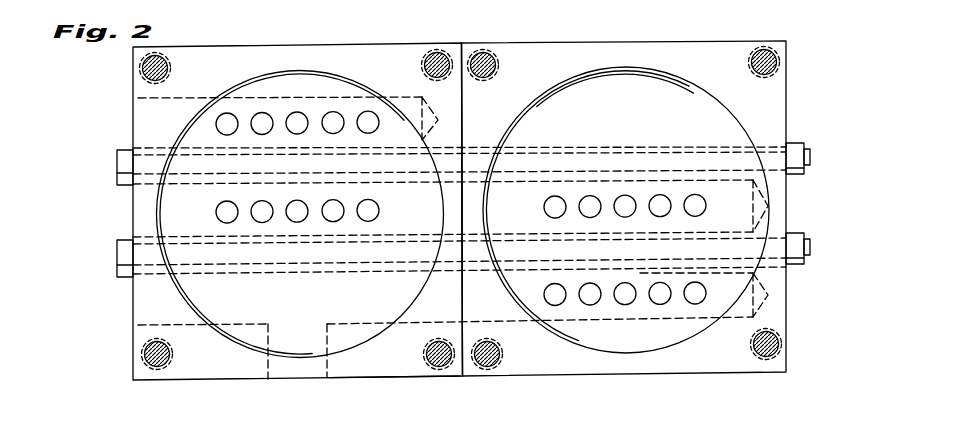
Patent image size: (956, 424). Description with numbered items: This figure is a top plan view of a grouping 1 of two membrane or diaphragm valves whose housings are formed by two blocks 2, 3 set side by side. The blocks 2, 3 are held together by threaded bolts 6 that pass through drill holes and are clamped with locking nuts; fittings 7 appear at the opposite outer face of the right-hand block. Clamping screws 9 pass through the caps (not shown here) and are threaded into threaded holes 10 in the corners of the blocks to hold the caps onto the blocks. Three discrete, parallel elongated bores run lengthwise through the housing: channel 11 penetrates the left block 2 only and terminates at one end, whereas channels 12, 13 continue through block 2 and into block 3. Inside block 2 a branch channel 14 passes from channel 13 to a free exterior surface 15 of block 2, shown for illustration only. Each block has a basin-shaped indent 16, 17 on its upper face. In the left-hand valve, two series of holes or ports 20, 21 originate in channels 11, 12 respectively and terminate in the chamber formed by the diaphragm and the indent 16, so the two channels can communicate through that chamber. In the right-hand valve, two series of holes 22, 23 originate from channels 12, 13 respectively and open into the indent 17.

The grouping 1 is at (463, 38).
The block 2 is at (203, 364).
The block 3 is at (513, 355).
The threaded bolt 6 is at (117, 165).
The outlet fitting 7 is at (810, 140).
The clamping screw 9 is at (490, 56).
The threaded hole 10 is at (160, 57).
The channel 11 is at (133, 98).
The channel 12 is at (153, 239).
The channel 13 is at (160, 321).
The branch channel 14 is at (328, 355).
The free exterior surface 15 is at (392, 378).
The basin-shaped indent 16 is at (322, 72).
The basin-shaped indent 17 is at (638, 97).
The holes 20 is at (230, 112).
The holes 21 is at (290, 220).
The holes 22 is at (557, 212).
The holes 23 is at (661, 296).